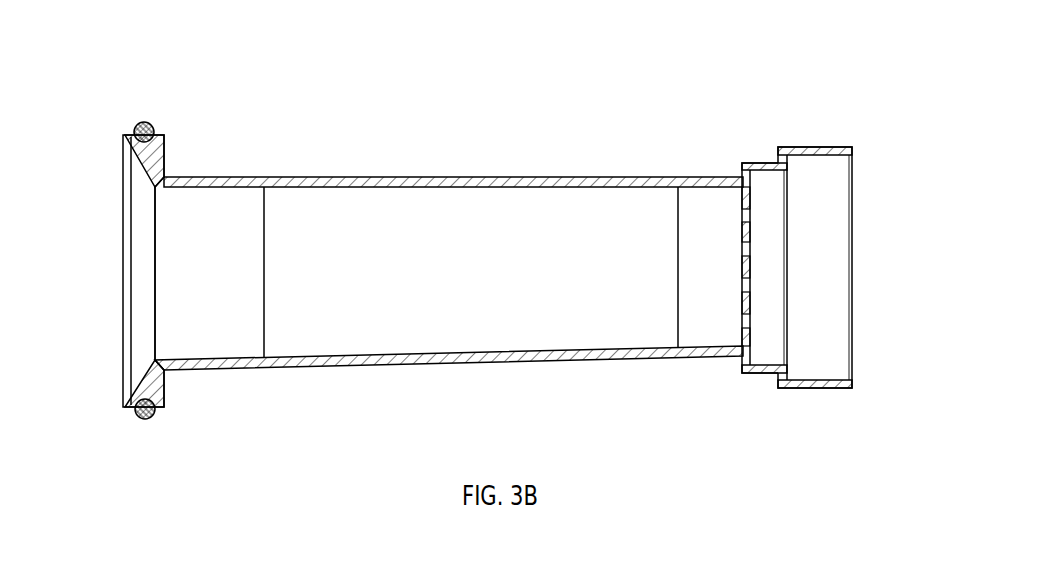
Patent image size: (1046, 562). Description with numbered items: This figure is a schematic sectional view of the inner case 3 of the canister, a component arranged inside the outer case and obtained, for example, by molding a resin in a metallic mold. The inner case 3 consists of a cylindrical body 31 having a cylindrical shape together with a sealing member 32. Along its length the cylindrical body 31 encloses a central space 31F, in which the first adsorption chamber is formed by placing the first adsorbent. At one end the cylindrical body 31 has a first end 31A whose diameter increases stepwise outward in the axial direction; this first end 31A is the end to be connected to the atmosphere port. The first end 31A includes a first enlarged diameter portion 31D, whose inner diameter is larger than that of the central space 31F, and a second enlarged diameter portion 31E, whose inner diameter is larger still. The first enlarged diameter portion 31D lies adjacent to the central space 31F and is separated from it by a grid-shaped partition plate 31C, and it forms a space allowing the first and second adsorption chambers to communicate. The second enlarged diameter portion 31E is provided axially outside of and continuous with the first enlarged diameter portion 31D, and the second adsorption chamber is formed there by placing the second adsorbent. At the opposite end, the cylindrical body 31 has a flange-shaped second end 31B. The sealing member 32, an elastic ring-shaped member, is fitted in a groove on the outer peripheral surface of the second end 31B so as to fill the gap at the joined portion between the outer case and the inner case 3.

The inner case 3 is at (141, 90).
The cylindrical body 31 is at (397, 177).
The first end 31A is at (760, 154).
The second end 31B is at (167, 150).
The partition plate 31C is at (748, 278).
The first enlarged diameter portion 31D is at (764, 218).
The second enlarged diameter portion 31E is at (817, 188).
The central space 31F is at (596, 236).
The sealing member 32 is at (143, 426).